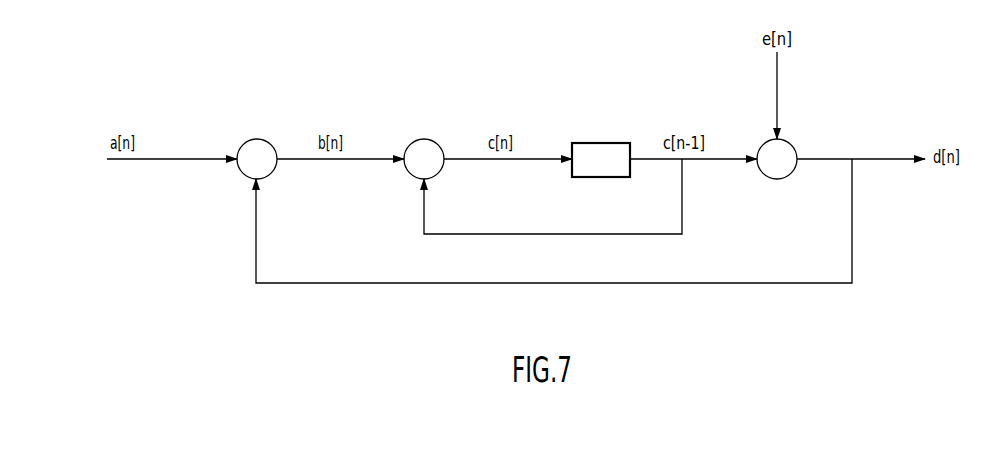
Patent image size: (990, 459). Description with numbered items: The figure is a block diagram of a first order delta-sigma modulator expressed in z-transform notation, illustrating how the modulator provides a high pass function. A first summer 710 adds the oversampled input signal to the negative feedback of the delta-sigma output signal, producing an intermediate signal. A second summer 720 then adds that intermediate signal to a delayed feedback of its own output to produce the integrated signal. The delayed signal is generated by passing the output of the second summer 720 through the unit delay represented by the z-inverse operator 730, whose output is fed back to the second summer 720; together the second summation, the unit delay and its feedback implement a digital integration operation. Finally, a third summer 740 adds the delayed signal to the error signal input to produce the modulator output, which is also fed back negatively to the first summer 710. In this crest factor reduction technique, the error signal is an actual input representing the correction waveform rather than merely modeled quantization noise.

The first summer 710 is at (254, 139).
The second summer 720 is at (423, 139).
The z^-1 operator 730 is at (602, 143).
The third summer 740 is at (792, 173).